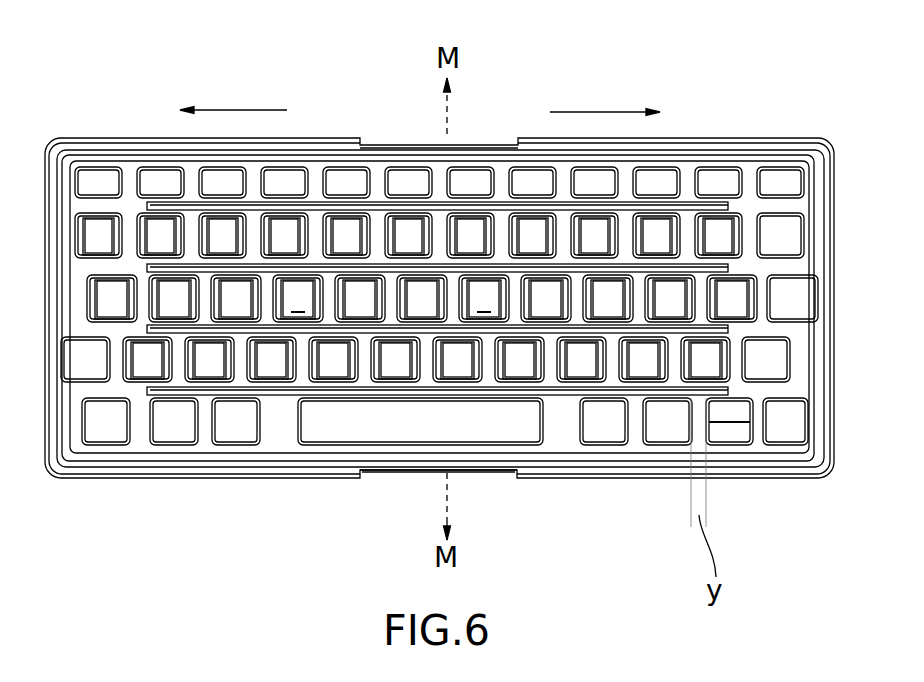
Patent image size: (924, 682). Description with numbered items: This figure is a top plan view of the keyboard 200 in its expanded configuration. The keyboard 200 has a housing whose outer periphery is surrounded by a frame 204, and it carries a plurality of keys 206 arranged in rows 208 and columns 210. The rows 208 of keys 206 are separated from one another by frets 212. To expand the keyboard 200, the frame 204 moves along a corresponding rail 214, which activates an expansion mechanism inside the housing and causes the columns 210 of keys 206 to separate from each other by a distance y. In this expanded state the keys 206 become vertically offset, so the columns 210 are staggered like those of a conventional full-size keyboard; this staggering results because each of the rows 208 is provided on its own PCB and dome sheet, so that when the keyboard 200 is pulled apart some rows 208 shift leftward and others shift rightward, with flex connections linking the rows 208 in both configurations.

The keyboard 200 is at (95, 106).
The frame 204 is at (325, 137).
The keys 206 is at (167, 430).
The rows 208 is at (835, 400).
The columns 210 is at (737, 167).
The frets 212 is at (552, 390).
The rail 214 is at (472, 152).